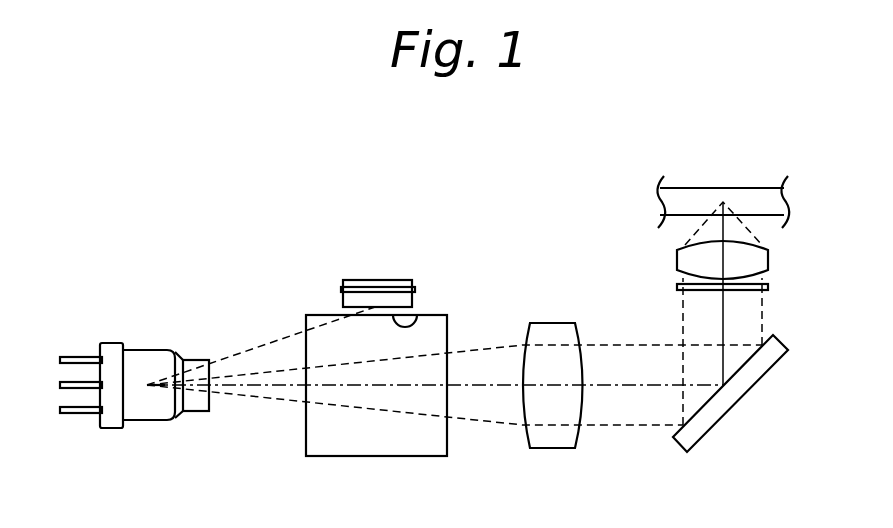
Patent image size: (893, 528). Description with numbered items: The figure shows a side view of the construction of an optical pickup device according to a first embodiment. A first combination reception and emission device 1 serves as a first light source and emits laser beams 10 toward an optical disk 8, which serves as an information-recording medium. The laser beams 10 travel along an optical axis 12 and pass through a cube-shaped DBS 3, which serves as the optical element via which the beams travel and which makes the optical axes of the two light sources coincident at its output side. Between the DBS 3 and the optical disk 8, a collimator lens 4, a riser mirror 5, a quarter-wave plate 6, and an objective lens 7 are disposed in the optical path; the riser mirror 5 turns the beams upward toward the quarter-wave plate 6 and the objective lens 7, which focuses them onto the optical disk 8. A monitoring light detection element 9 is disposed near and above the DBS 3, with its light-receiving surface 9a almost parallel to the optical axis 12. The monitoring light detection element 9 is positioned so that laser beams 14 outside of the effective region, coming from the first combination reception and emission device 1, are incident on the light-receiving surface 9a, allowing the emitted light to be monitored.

The first combination reception and emission device 1 is at (143, 420).
The DBS 3 is at (326, 315).
The collimator lens 4 is at (553, 325).
The riser mirror 5 is at (727, 415).
The quarter-wave plate 6 is at (768, 288).
The objective lens 7 is at (768, 258).
The optical disk 8 is at (780, 197).
The monitoring light detection element 9 is at (373, 272).
The light-receiving surface 9a is at (417, 317).
The laser beams 10 is at (277, 397).
The optical axis 12 is at (232, 388).
The laser beams outside of the effective region 14 is at (255, 345).